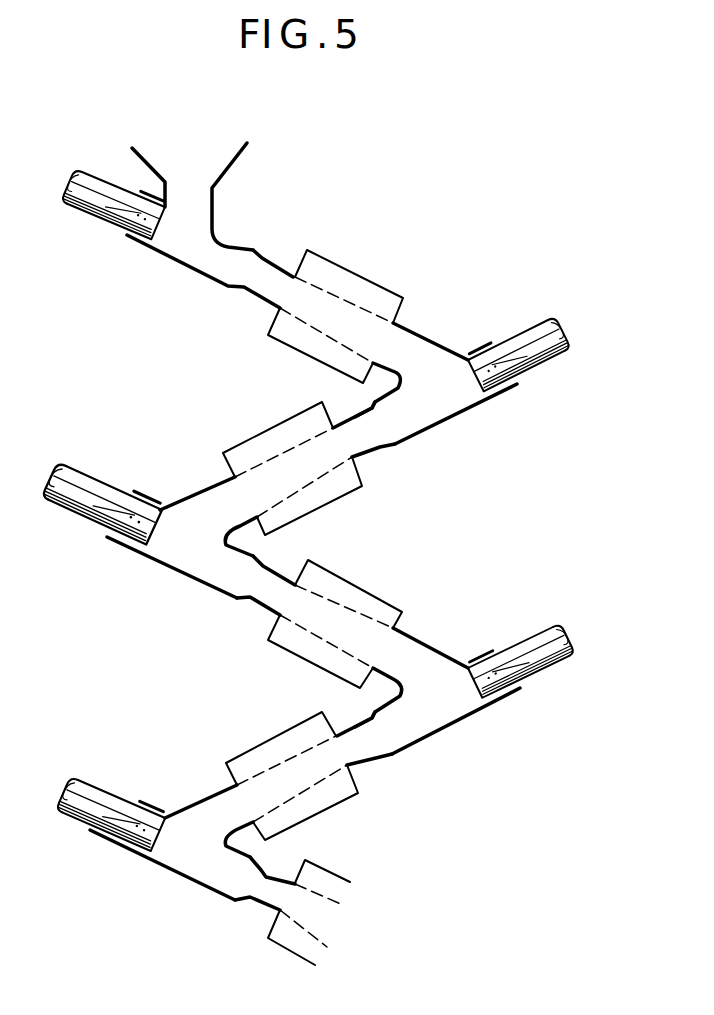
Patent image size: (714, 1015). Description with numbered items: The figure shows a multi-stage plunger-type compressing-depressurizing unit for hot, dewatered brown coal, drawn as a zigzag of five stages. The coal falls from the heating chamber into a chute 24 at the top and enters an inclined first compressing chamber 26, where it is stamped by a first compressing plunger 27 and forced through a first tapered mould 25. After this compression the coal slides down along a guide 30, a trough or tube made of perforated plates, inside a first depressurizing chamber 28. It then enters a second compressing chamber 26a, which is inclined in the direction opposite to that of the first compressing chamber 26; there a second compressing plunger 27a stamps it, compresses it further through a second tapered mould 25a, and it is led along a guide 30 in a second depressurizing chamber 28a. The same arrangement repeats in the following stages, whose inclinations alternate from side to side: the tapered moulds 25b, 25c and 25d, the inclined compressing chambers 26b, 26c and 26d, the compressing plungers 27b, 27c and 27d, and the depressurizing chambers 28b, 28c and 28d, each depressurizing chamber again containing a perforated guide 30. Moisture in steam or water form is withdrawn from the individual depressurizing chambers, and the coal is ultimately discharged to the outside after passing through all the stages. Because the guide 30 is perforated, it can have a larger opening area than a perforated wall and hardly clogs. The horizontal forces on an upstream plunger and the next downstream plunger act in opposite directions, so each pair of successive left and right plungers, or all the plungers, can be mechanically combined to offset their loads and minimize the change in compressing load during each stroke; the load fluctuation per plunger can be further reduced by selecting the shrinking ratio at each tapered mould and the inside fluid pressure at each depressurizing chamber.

The chute 24 is at (244, 148).
The first tapered mould 25 is at (240, 290).
The second tapered mould 25a is at (392, 445).
The tapered mould 25b is at (238, 600).
The tapered mould 25c is at (388, 756).
The tapered mould 25d is at (245, 902).
The first compressing chamber 26 is at (273, 273).
The second compressing chamber 26a is at (363, 440).
The inclined compressing chamber 26b is at (270, 600).
The inclined compressing chamber 26c is at (383, 777).
The inclined compressing chamber 26d is at (277, 887).
The first compressing plunger 27 is at (100, 218).
The second compressing plunger 27a is at (535, 368).
The compressing plunger 27b is at (77, 515).
The compressing plunger 27c is at (538, 677).
The compressing plunger 27d is at (80, 818).
The first depressurizing chamber 28 is at (348, 268).
The second depressurizing chamber 28a is at (268, 428).
The depressurizing chamber 28b is at (385, 593).
The depressurizing chamber 28c is at (232, 760).
The depressurizing chamber 28d is at (350, 883).
The guide 30 is at (368, 308).